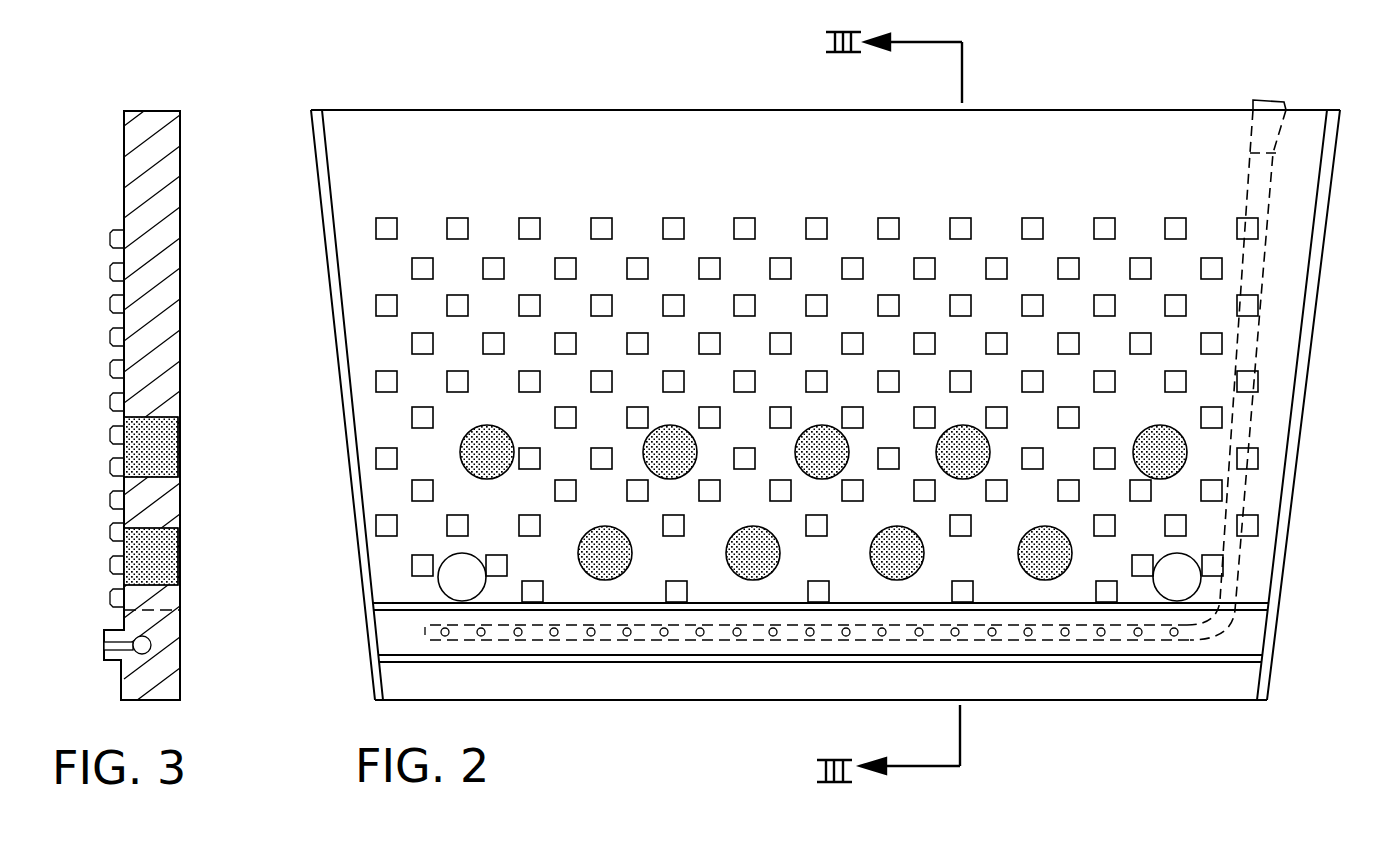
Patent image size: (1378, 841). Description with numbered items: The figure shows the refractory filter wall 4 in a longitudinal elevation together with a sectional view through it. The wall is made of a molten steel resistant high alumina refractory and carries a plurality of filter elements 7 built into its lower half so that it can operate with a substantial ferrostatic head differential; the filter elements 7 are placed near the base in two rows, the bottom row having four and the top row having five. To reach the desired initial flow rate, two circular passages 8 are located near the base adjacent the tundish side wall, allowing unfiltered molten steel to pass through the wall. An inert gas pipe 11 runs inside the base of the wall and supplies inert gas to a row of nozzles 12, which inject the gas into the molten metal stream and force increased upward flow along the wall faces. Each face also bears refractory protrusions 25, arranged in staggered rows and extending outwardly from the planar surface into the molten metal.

In FIG. 2, the refractory filter wall 4 is at (1006, 98).
In FIG. 3, the refractory filter wall 4 is at (152, 97).
In FIG. 2, the refractory protrusions 25 is at (639, 258).
In FIG. 3, the refractory protrusions 25 is at (110, 403).
In FIG. 2, the filter elements 7 is at (1037, 578).
In FIG. 3, the filter elements 7 is at (163, 563).
In FIG. 2, the circular passages 8 is at (458, 594).
In FIG. 2, the nozzles 12 is at (667, 637).
In FIG. 3, the nozzles 12 is at (110, 652).
In FIG. 2, the inert gas pipe 11 is at (1257, 273).
In FIG. 3, the inert gas pipe 11 is at (142, 654).